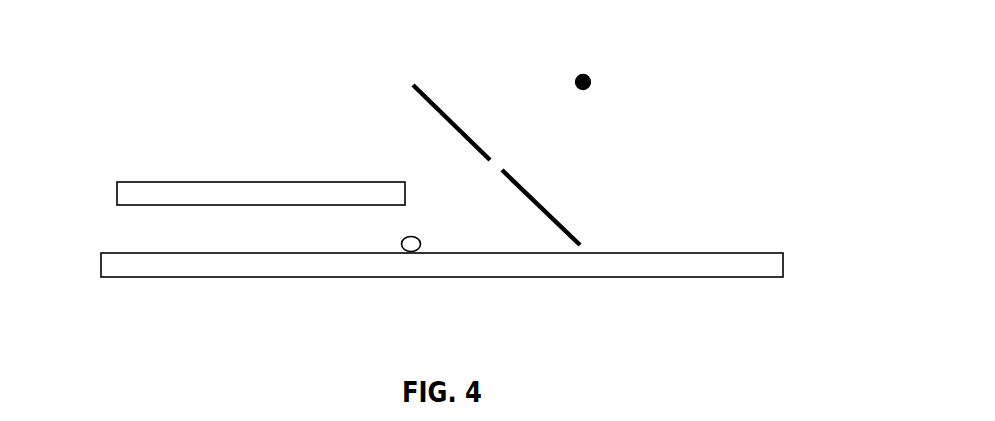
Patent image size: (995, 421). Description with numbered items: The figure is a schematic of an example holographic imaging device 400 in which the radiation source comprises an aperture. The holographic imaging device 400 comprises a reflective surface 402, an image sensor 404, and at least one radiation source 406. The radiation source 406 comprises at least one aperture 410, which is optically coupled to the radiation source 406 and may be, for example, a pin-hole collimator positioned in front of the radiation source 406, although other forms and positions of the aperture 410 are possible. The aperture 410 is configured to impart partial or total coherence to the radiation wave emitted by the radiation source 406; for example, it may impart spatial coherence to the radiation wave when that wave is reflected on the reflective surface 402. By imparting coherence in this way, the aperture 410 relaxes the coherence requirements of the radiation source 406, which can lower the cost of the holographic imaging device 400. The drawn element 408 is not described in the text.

The holographic imaging device 400 is at (203, 94).
The reflective surface 402 is at (522, 277).
The image sensor 404 is at (215, 182).
The radiation source 406 is at (574, 78).
The droplet 408 is at (401, 243).
The aperture 410 is at (458, 132).